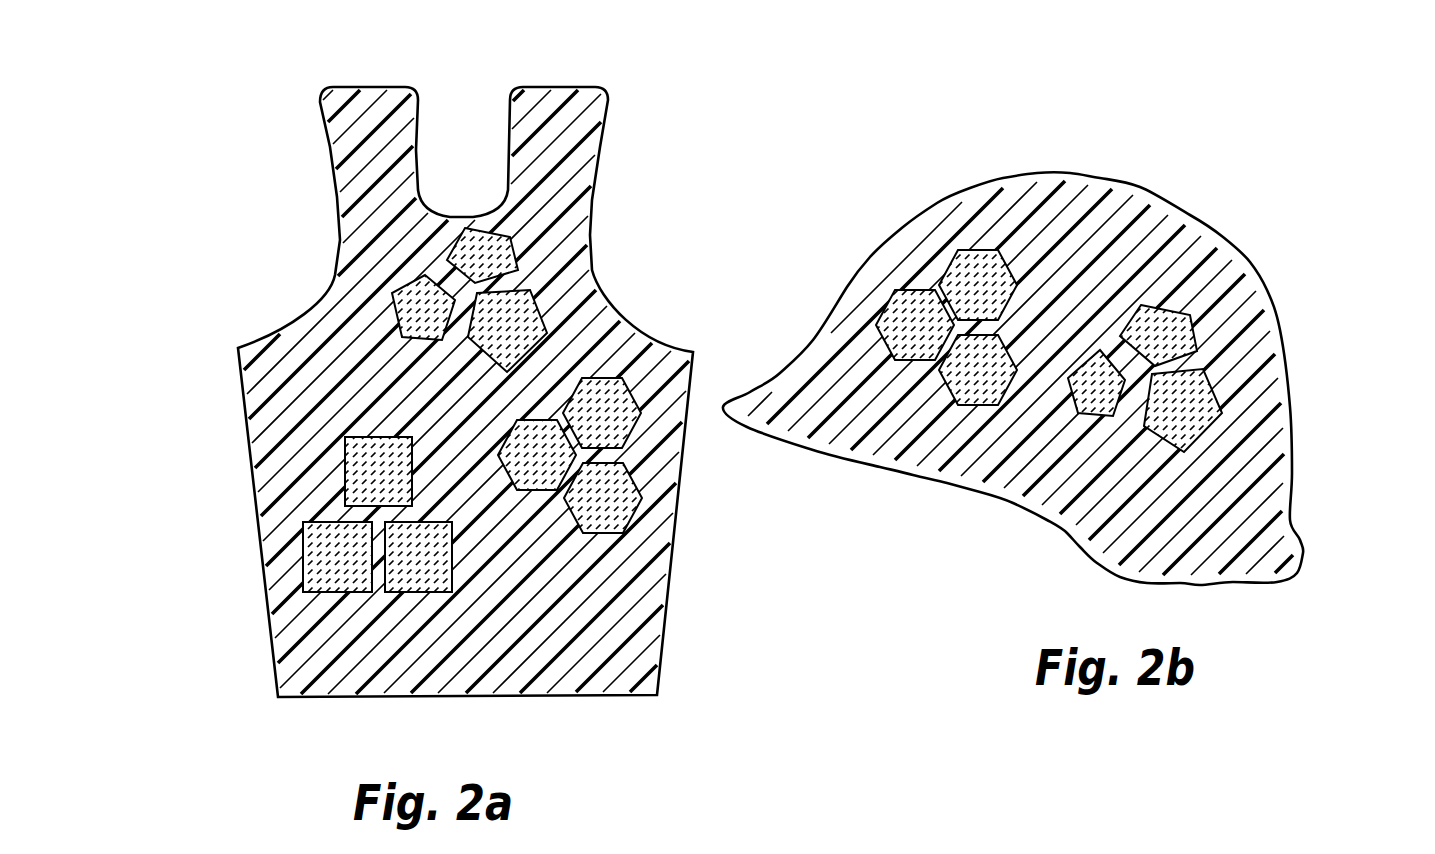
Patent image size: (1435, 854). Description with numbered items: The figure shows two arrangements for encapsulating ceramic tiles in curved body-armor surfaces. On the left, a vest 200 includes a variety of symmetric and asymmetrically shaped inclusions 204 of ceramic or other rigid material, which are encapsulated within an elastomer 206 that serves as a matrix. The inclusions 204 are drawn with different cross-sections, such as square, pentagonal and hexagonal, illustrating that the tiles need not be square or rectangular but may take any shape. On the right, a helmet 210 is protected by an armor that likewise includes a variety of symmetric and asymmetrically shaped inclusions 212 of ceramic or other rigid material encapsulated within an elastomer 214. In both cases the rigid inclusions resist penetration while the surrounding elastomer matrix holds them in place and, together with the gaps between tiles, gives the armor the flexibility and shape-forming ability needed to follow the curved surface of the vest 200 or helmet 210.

In FIG. 2A, the vest 200 is at (602, 210).
In FIG. 2A, the inclusions 204 is at (467, 235).
In FIG. 2A, the elastomer 206 is at (325, 394).
In FIG. 2B, the helmet 210 is at (1197, 167).
In FIG. 2B, the inclusions 212 is at (970, 262).
In FIG. 2B, the elastomer 214 is at (1223, 503).